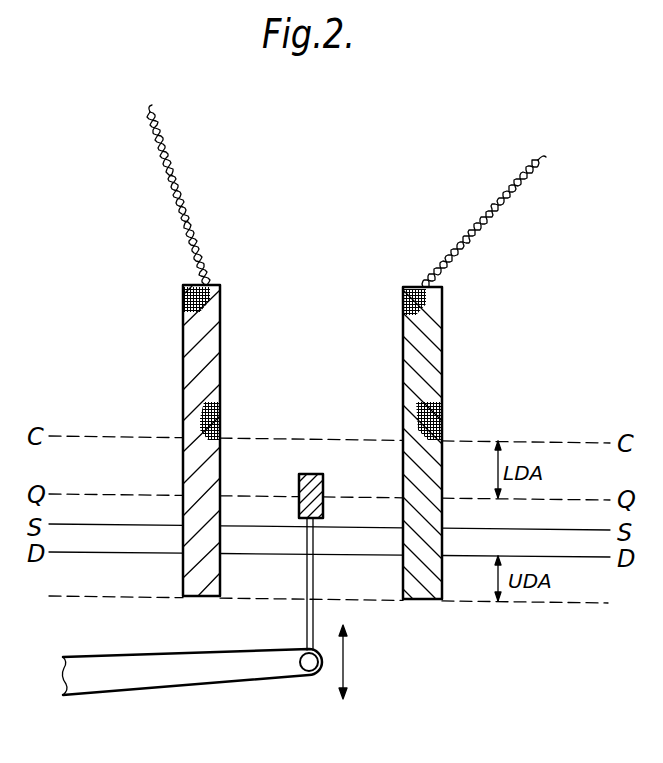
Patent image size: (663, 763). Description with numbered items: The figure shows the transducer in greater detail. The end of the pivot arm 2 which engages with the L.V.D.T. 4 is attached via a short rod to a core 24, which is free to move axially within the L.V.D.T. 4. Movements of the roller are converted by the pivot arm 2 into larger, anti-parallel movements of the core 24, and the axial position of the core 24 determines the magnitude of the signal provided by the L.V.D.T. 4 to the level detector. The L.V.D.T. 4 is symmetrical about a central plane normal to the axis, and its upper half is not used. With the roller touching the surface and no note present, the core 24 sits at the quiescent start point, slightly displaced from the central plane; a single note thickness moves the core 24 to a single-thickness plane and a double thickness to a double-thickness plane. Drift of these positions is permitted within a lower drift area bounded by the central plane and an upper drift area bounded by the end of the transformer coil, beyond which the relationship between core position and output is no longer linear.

The pivot arm 2 is at (183, 685).
The L.V.D.T. 4 is at (454, 348).
The core 24 is at (308, 474).